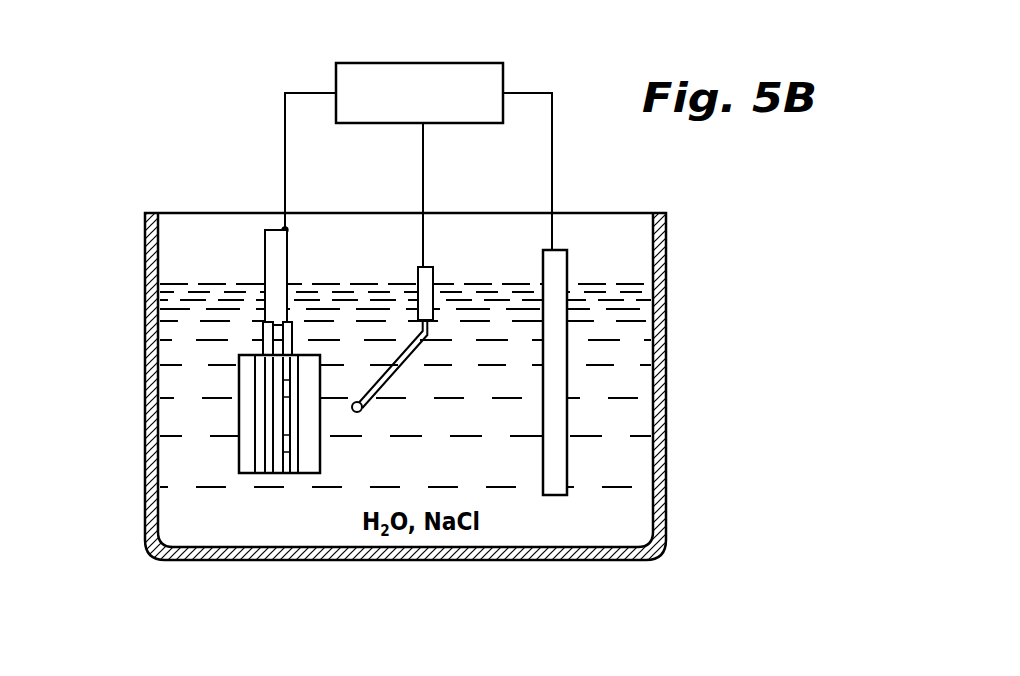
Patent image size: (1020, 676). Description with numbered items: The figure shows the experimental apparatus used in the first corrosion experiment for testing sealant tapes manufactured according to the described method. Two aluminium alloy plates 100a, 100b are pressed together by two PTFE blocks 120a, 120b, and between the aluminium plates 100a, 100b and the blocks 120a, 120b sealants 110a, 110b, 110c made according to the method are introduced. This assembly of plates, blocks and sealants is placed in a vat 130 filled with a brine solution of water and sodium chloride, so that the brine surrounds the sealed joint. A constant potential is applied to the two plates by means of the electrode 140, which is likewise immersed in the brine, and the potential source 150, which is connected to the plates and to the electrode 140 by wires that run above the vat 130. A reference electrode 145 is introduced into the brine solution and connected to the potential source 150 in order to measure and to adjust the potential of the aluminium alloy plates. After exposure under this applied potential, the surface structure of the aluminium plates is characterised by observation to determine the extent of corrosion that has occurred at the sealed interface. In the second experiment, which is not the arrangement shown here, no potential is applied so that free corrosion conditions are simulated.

The aluminium plate 100a is at (265, 335).
The aluminium plate 100b is at (292, 338).
The sealant 110a is at (262, 473).
The sealant 110b is at (280, 473).
The sealant 110c is at (297, 473).
The PTFE block 120a is at (247, 453).
The PTFE block 120b is at (308, 447).
The vat 130 is at (665, 356).
The electrode 140 is at (560, 452).
The reference electrode 145 is at (385, 381).
The potential source 150 is at (437, 77).